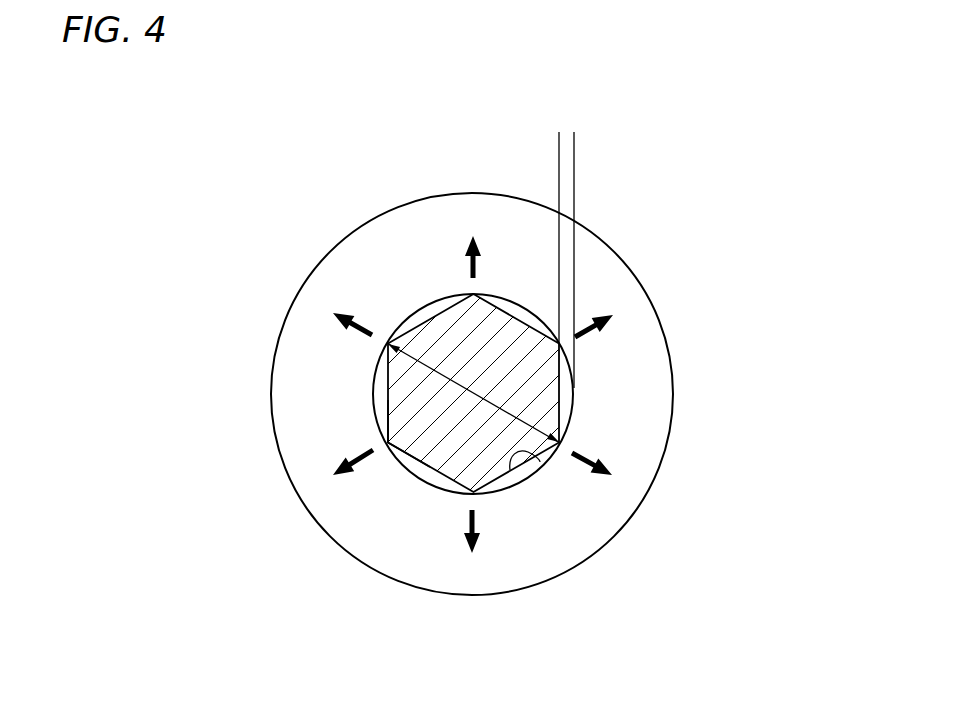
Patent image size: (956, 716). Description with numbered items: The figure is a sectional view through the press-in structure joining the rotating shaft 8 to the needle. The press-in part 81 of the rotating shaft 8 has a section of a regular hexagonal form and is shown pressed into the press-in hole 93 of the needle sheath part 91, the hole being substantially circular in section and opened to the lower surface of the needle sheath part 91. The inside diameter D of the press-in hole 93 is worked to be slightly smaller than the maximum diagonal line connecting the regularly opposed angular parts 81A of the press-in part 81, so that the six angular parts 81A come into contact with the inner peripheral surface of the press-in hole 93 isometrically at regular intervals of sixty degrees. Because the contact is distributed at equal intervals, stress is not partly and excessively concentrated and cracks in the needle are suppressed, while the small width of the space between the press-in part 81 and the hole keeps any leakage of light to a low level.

The rotating shaft 8 is at (474, 300).
The press-in part 81 is at (433, 312).
The angular parts 81A is at (388, 446).
The needle sheath part 91 is at (307, 457).
The press-in hole 93 is at (510, 470).
The diameter of the press-in hole D is at (395, 403).